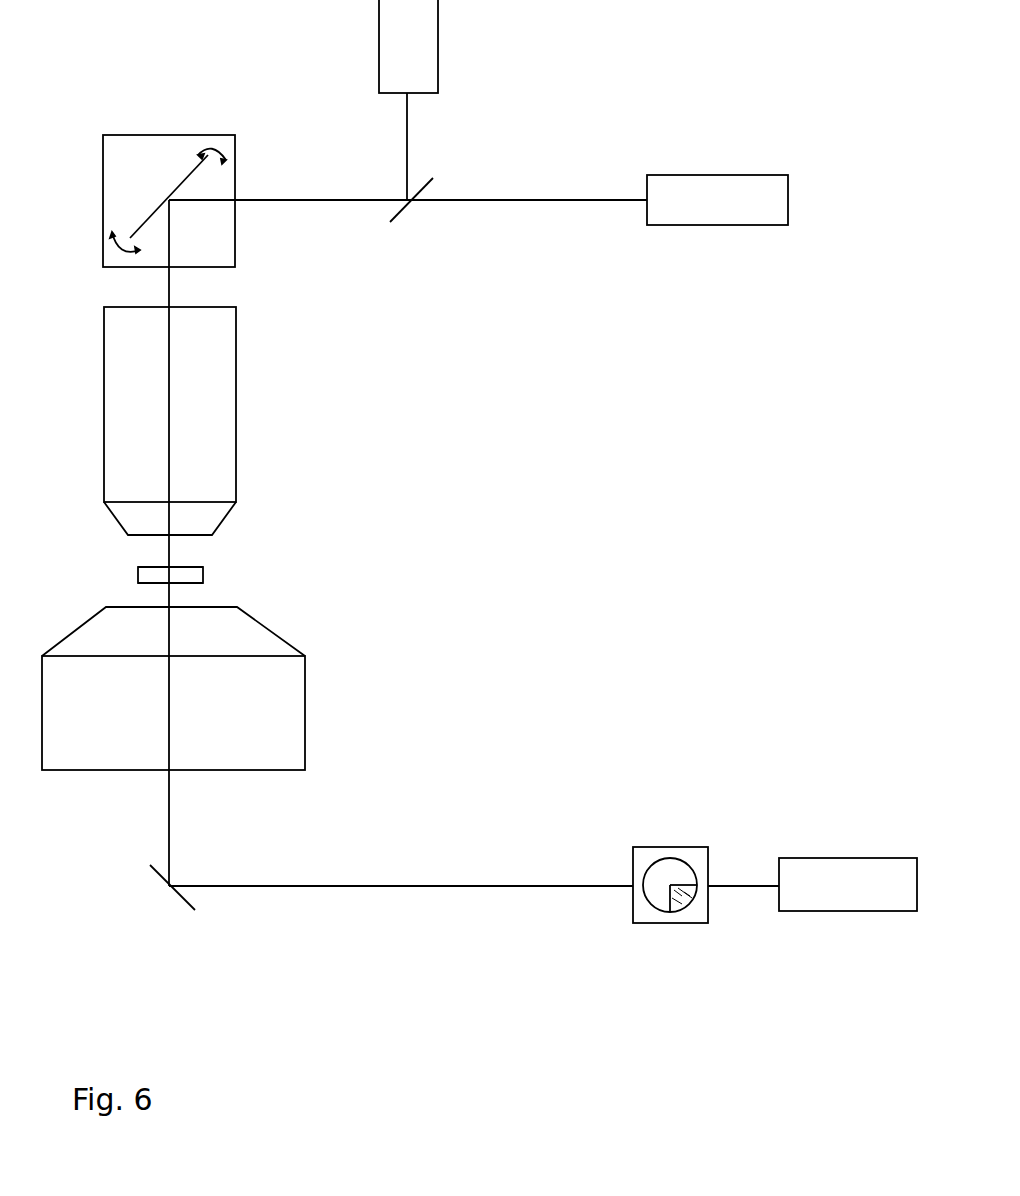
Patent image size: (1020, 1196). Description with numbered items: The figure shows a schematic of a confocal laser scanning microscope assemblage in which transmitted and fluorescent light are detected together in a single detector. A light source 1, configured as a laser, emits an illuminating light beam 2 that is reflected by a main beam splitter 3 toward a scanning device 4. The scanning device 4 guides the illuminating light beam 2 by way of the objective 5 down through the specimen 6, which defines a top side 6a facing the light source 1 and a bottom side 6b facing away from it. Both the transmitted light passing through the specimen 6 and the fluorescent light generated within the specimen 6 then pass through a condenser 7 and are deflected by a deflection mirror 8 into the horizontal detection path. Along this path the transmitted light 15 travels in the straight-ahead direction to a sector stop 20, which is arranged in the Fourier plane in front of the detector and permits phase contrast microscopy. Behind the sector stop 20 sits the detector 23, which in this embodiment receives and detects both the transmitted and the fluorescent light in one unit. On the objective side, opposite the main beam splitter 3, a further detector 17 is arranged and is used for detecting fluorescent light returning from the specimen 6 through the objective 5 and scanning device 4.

The light source 1 is at (408, 46).
The illuminating light beam 2 is at (407, 136).
The main beam splitter 3 is at (425, 186).
The scanning device 4 is at (133, 162).
The objective 5 is at (217, 388).
The specimen 6 is at (197, 573).
The top side 6a is at (185, 565).
The bottom side 6b is at (187, 587).
The condenser 7 is at (277, 705).
The deflection mirror 8 is at (158, 877).
The transmitted light 15 is at (585, 886).
The detector 17 is at (717, 200).
The sector stop 20 is at (672, 868).
The detector 23 is at (848, 884).